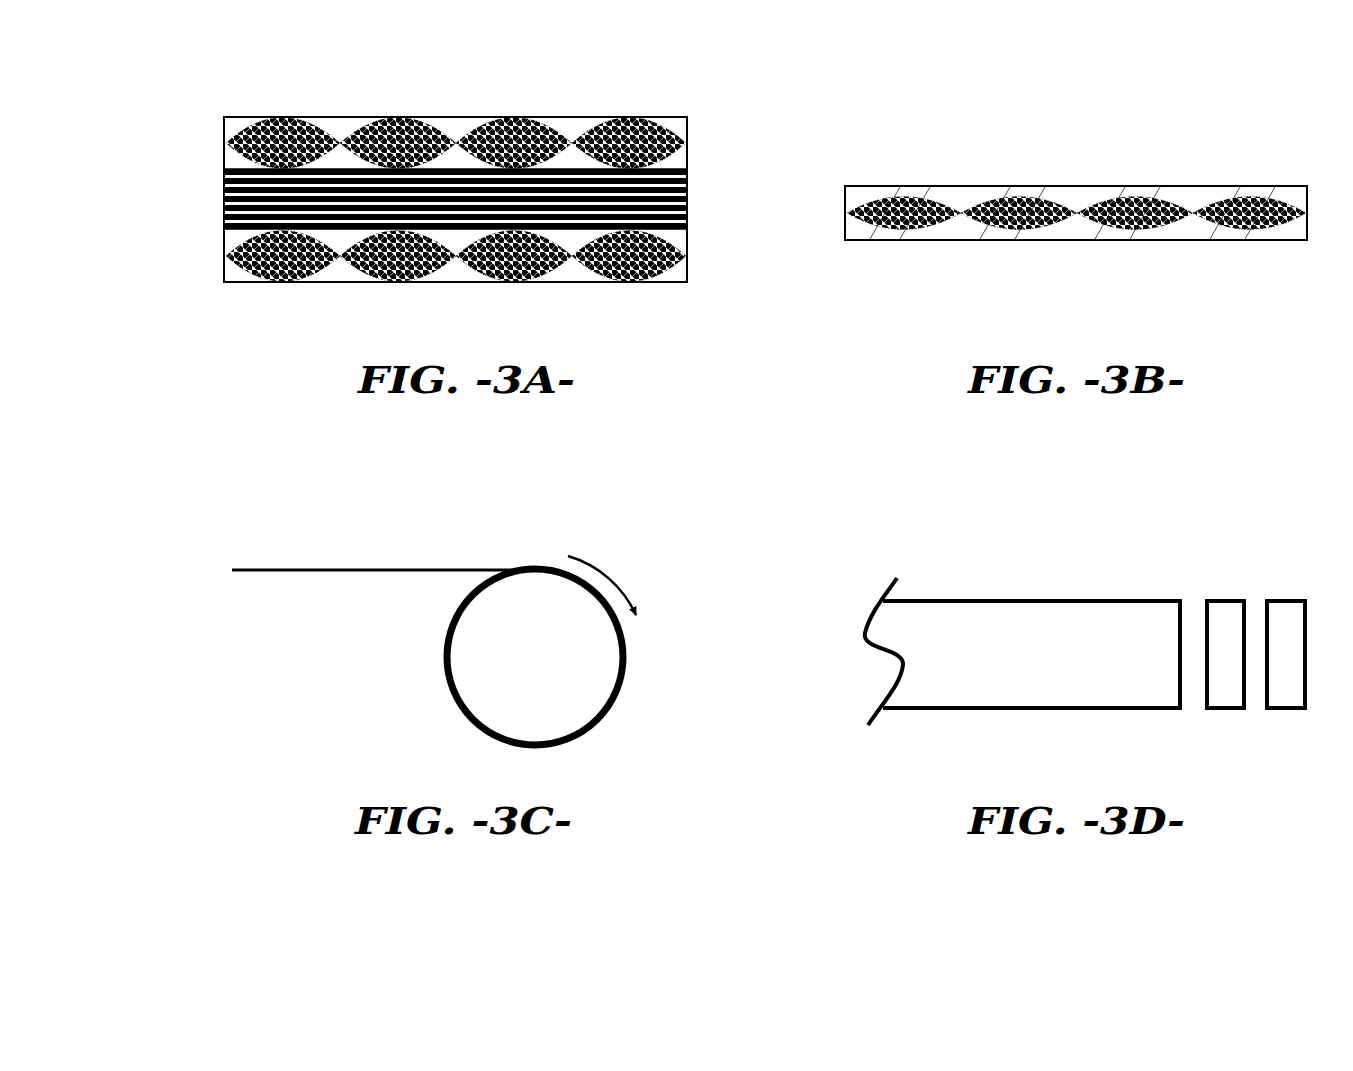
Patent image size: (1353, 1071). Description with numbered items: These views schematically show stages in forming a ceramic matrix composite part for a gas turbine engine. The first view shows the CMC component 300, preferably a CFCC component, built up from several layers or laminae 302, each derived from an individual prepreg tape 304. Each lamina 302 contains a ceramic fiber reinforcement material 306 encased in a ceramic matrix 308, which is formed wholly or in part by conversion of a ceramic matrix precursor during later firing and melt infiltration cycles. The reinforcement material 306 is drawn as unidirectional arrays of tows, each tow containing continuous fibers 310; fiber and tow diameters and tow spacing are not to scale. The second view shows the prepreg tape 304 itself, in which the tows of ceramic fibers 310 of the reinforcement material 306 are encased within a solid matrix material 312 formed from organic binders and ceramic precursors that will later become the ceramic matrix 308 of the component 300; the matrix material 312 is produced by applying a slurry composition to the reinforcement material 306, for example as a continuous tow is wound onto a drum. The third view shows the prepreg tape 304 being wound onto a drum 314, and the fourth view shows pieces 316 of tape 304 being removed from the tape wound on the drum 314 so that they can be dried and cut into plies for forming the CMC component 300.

In FIG. 3A, the CMC component 300 is at (273, 80).
In FIG. 3A, the lamina 302 is at (693, 228).
In FIG. 3B, the prepreg tape 304 is at (888, 111).
In FIG. 3C, the prepreg tape 304 is at (370, 570).
In FIG. 3D, the prepreg tape 304 is at (997, 628).
In FIG. 3A, the fiber reinforcement material 306 is at (588, 124).
In FIG. 3B, the fiber reinforcement material 306 is at (1205, 198).
In FIG. 3A, the ceramic matrix 308 is at (455, 121).
In FIG. 3A, the fibers 310 is at (353, 190).
In FIG. 3B, the fibers 310 is at (975, 207).
In FIG. 3B, the matrix material 312 is at (1080, 205).
In FIG. 3C, the drum 314 is at (590, 695).
In FIG. 3D, the pieces 316 is at (1227, 622).